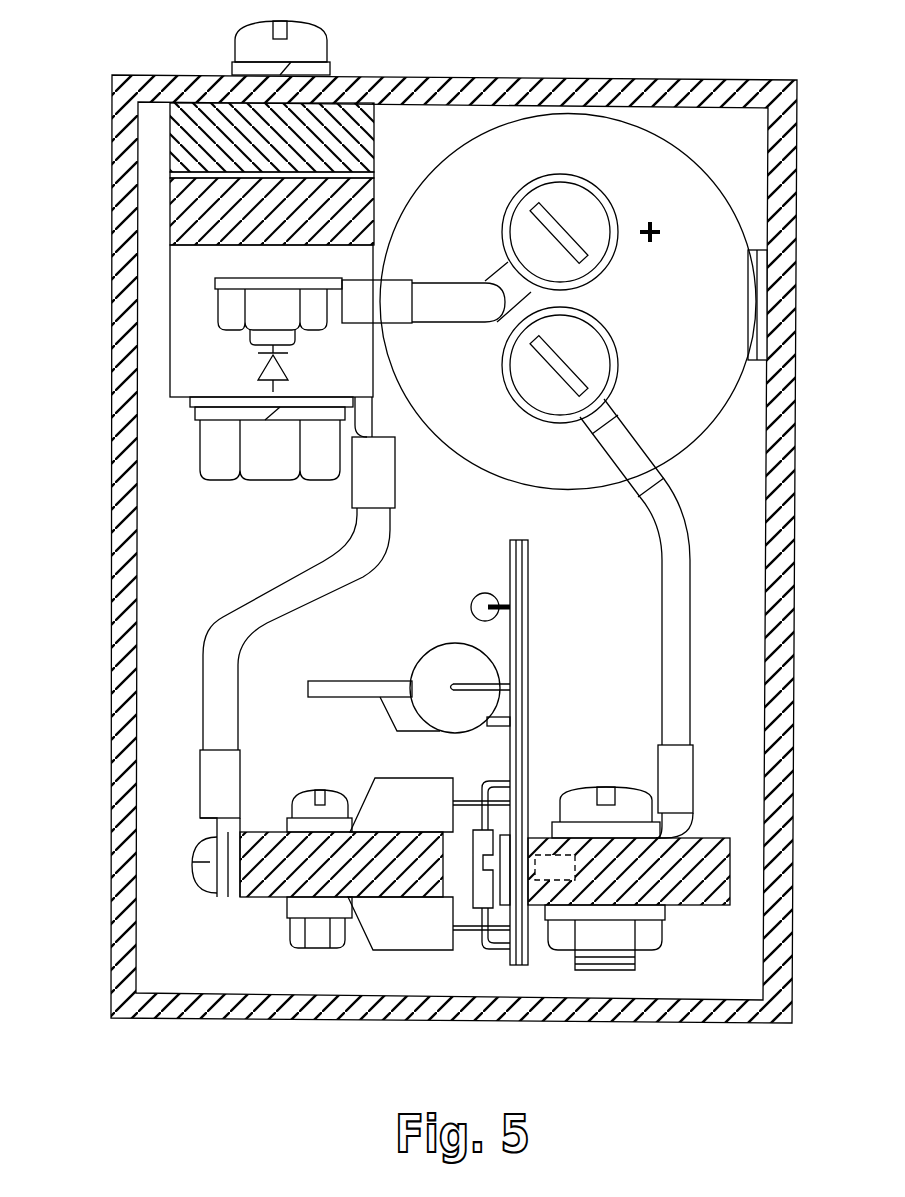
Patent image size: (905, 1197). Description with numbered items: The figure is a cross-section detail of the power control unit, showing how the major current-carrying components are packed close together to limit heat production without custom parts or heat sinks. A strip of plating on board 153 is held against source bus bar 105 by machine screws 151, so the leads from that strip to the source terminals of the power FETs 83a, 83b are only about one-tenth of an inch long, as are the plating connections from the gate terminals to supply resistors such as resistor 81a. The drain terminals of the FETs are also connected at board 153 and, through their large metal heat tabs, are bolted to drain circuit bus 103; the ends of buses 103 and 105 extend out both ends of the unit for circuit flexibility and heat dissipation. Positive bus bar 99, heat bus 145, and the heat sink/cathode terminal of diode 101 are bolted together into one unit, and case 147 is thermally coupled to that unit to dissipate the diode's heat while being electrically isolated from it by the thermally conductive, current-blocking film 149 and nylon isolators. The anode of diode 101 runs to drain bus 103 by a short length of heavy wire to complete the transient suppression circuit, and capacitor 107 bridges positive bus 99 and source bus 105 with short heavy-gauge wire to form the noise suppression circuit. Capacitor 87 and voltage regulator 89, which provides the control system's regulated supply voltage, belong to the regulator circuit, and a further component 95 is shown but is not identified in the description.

The case 147 is at (455, 78).
The heat bus 145 is at (178, 142).
The thermally conductive/current blocking film 149 is at (380, 175).
The positive bus bar 99 is at (178, 212).
The diode 101 is at (224, 379).
The capacitor 107 is at (700, 332).
The pivot pin 95 is at (483, 593).
The capacitor 87 is at (447, 650).
The voltage regulator 89 is at (352, 681).
The board 153 is at (527, 660).
The machine screws 151 is at (485, 852).
The FET 83b is at (432, 818).
The FET 83a is at (432, 942).
The resistor 81a is at (487, 950).
The drain circuit bus 103 is at (270, 900).
The source bus bar 105 is at (687, 908).